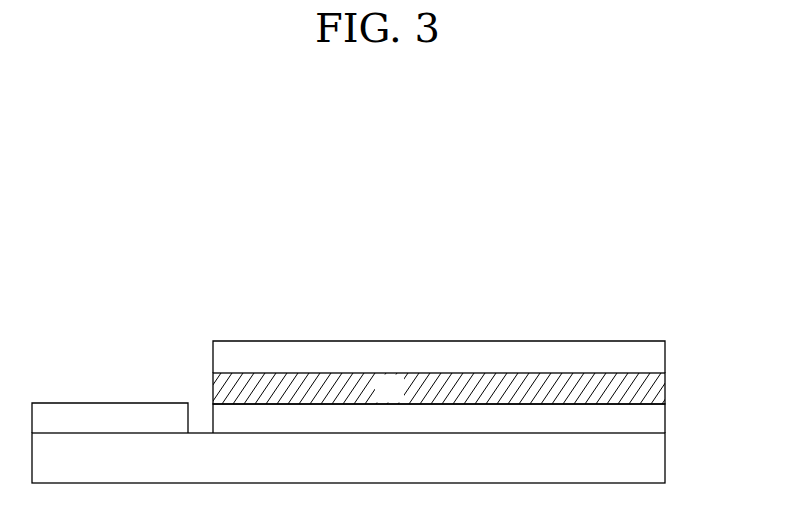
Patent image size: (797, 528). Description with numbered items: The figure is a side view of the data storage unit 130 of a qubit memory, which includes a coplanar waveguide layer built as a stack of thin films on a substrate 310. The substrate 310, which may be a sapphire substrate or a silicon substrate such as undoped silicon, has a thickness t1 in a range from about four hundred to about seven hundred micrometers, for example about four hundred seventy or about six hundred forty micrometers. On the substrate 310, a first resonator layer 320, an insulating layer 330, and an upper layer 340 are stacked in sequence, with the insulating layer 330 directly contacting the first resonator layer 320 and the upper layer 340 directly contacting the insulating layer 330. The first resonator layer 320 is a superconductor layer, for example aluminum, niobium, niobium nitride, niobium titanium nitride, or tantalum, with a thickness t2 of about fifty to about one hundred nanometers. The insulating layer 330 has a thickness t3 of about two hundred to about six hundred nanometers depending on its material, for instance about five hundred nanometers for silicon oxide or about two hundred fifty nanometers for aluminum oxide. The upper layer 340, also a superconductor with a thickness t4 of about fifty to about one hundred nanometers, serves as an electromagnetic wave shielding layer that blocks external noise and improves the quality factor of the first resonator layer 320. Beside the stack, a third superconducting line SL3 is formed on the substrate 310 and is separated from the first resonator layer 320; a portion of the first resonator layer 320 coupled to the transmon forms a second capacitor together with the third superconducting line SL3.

The data storage unit 130 is at (660, 308).
The substrate 310 is at (655, 458).
The first resonator layer 320 is at (655, 420).
The insulating layer 330 is at (655, 387).
The upper layer 340 is at (655, 358).
The third superconducting line SL3 is at (107, 413).
The thickness of the substrate t1 is at (278, 433).
The thickness of the first resonator layer t2 is at (497, 404).
The thickness of the insulating layer t3 is at (374, 373).
The thickness of the upper layer t4 is at (278, 341).